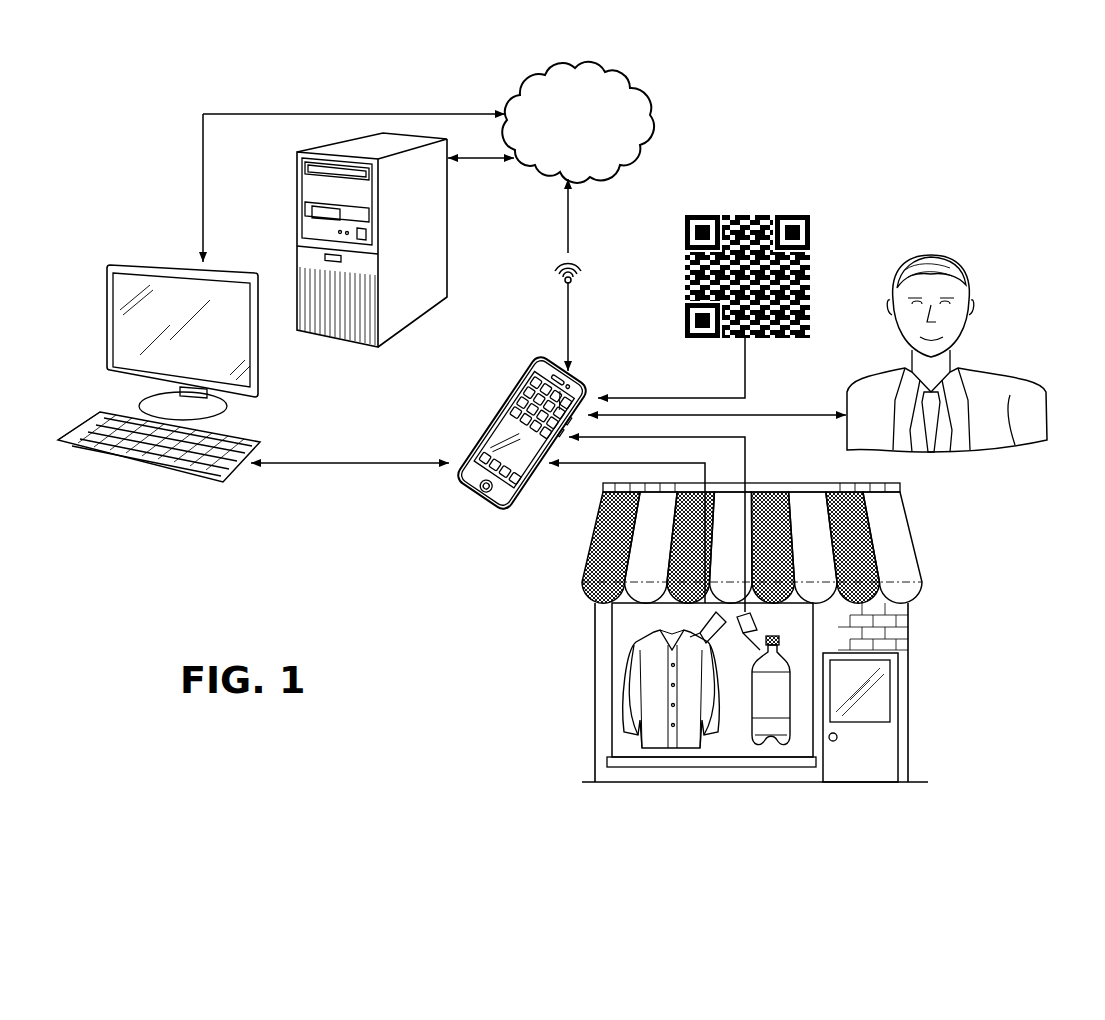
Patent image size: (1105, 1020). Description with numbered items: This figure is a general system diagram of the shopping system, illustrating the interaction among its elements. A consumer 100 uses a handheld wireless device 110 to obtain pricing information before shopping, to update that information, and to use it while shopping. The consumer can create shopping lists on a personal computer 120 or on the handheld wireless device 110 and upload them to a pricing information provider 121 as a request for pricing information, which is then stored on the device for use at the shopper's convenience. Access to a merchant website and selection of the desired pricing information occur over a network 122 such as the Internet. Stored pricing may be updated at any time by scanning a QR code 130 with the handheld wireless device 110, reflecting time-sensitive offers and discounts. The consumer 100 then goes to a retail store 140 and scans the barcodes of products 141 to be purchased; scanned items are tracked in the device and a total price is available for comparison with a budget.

The consumer 100 is at (925, 256).
The handheld wireless device 110 is at (466, 503).
The personal computer 120 is at (127, 265).
The pricing information provider 121 is at (297, 183).
The network 122 is at (592, 131).
The QR code 130 is at (790, 214).
The retail store 140 is at (908, 640).
The products 141 is at (640, 644).